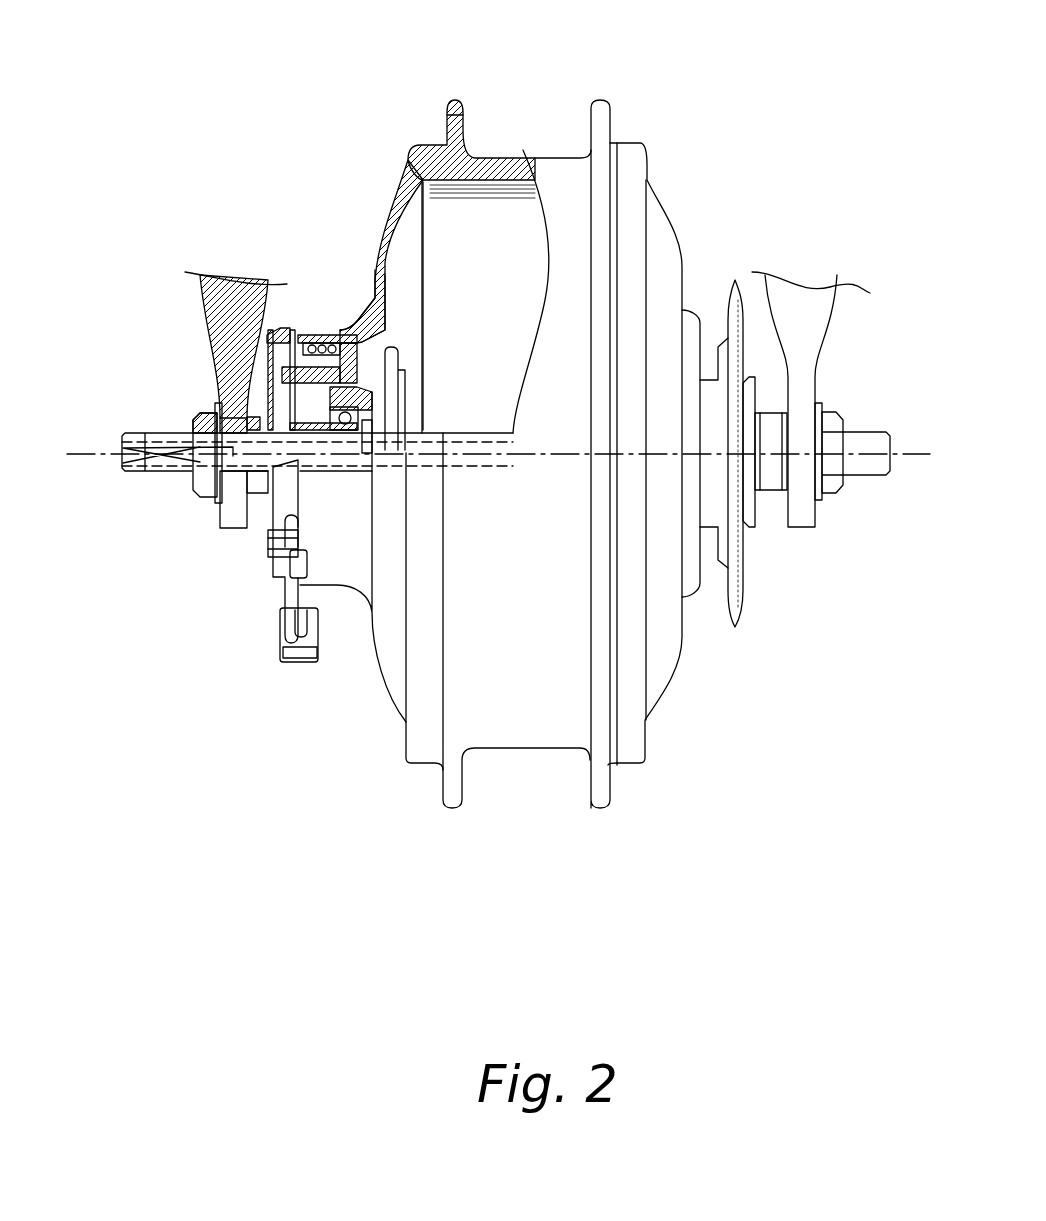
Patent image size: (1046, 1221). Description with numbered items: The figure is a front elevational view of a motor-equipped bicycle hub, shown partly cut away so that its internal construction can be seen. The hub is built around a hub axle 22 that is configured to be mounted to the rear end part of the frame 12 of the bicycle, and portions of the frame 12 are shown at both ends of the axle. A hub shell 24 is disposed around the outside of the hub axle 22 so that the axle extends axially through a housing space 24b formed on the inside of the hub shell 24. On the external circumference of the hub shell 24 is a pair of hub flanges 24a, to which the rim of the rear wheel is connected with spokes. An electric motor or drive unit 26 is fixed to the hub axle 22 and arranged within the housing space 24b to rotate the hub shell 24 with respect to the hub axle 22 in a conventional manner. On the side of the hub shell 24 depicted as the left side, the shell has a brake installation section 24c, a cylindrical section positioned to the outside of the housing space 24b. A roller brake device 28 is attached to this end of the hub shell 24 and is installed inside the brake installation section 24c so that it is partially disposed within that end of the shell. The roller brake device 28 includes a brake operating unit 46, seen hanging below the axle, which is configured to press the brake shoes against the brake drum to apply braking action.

The frame 12 is at (213, 330).
The hub axle 22 is at (143, 438).
The hub shell 24 is at (490, 160).
The hub flanges 24a is at (455, 98).
The housing space 24b is at (407, 275).
The brake installation section 24c is at (320, 330).
The electric motor 26 is at (450, 227).
The roller brake device 28 is at (285, 332).
The brake operating unit 46 is at (282, 610).